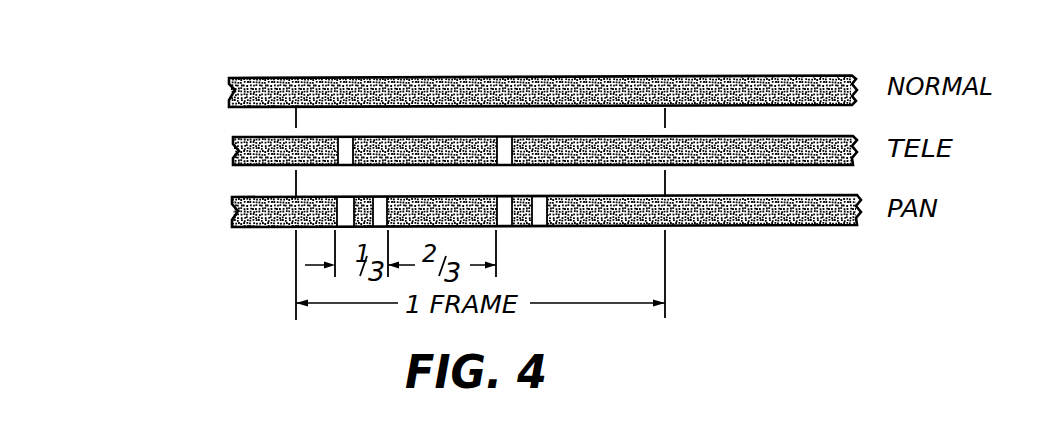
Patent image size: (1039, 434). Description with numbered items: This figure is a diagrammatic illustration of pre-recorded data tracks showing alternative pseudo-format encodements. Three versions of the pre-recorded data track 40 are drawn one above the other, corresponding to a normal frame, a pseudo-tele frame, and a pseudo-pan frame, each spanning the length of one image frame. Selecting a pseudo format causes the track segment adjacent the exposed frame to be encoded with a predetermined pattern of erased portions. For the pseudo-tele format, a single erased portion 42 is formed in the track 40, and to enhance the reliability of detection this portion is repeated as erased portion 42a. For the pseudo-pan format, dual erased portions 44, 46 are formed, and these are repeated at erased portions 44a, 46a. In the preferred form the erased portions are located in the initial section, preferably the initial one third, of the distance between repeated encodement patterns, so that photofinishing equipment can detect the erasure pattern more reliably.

The pre-recorded data track 40 is at (230, 84).
The erased portion 42 is at (353, 137).
The repeated erased portion 42a is at (507, 137).
The erased portion 44 is at (345, 197).
The repeated erased portion 44a is at (508, 197).
The erased portion 46 is at (382, 197).
The repeated erased portion 46a is at (538, 197).